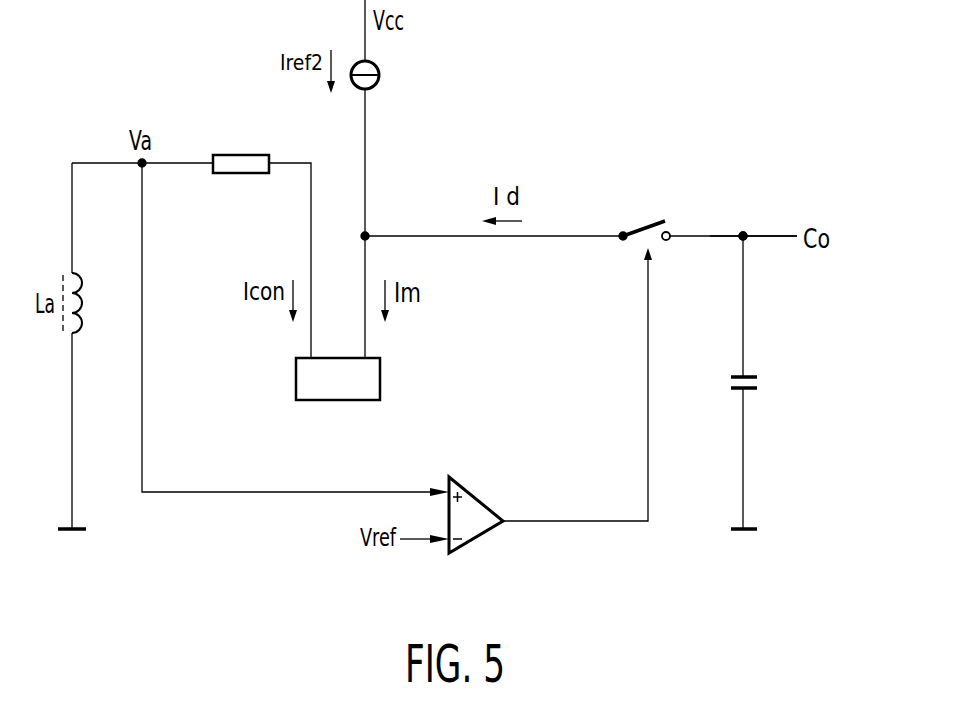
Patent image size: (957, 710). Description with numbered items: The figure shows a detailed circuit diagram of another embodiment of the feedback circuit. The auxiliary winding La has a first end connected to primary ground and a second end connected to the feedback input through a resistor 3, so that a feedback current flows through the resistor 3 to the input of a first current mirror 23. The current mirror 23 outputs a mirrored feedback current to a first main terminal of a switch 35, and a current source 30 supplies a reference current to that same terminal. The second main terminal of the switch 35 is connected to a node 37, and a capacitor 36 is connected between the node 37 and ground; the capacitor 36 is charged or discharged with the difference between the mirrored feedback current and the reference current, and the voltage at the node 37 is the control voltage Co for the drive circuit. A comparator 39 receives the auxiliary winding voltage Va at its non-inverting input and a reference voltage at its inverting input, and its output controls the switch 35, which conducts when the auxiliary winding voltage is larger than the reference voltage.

The resistor 3 is at (232, 154).
The current source 30 is at (379, 72).
The first current mirror 23 is at (306, 402).
The switch 35 is at (645, 222).
The node 37 is at (763, 232).
The capacitor 36 is at (728, 383).
The comparator 39 is at (481, 538).